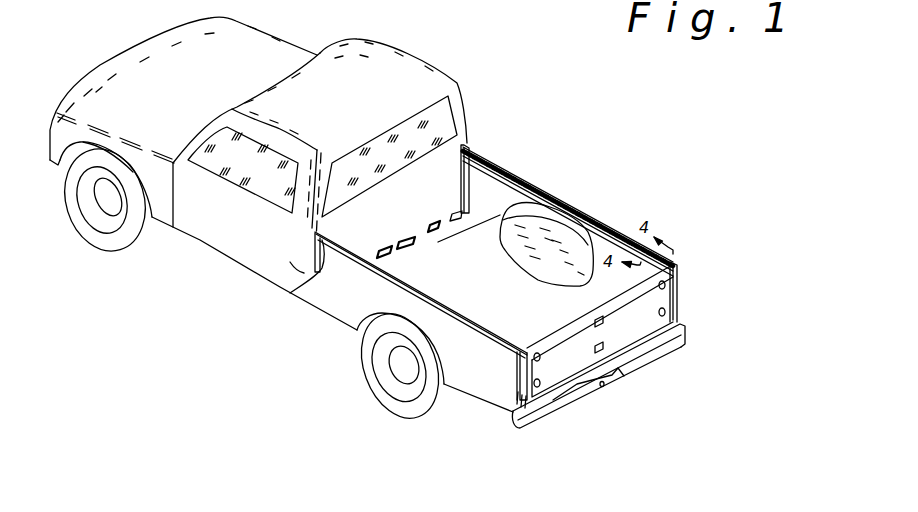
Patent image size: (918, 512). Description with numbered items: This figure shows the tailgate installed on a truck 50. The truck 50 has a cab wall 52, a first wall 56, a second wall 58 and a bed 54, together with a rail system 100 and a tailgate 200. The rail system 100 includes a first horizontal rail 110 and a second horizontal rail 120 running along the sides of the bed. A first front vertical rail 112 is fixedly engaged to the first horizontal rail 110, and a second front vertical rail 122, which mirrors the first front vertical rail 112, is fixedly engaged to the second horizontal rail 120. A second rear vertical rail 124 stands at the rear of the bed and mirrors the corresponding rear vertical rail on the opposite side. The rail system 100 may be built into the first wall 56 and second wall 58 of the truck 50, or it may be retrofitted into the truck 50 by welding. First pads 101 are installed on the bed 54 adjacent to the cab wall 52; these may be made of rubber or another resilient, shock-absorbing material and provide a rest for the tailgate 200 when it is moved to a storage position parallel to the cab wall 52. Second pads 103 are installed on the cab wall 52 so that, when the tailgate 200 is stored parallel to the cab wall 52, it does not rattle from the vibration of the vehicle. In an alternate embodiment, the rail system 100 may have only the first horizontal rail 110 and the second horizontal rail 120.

The truck 50 is at (182, 272).
The cab wall 52 is at (392, 230).
The bed 54 is at (513, 308).
The first wall 56 is at (613, 277).
The second wall 58 is at (465, 376).
The rail system 100 is at (537, 177).
The first pads 101 is at (397, 240).
The second pads 103 is at (432, 237).
The first horizontal rail 110 is at (550, 217).
The first front vertical rail 112 is at (433, 280).
The second horizontal rail 120 is at (356, 354).
The second front vertical rail 122 is at (313, 237).
The second rear vertical rail 124 is at (477, 337).
The tailgate 200 is at (628, 312).